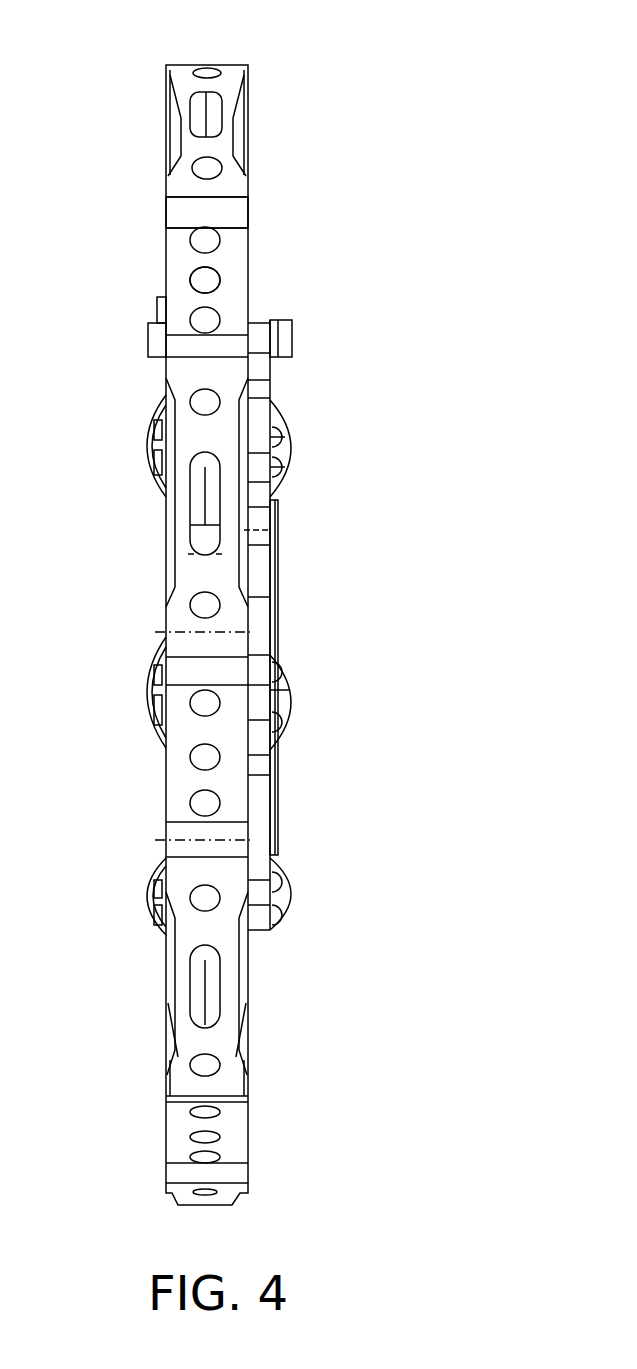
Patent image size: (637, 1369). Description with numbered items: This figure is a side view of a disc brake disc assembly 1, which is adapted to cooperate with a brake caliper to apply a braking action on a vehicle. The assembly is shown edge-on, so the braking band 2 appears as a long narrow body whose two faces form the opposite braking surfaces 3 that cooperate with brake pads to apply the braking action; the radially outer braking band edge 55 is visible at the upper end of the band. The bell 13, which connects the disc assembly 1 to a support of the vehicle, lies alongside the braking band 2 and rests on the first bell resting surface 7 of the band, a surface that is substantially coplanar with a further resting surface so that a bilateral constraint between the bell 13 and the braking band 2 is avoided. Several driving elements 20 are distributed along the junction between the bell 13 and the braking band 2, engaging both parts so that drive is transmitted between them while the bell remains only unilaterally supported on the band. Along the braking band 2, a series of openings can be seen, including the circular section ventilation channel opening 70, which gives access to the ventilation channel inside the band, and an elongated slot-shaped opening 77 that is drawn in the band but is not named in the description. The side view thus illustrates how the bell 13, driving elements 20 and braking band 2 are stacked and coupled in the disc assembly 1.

The disc assembly 1 is at (410, 271).
The braking band 2 is at (175, 793).
The opposite braking surface 3 is at (251, 154).
The first bell resting surface 7 is at (166, 222).
The bell 13 is at (280, 800).
The driving element 20 is at (292, 342).
The radially outer braking band edge 55 is at (218, 65).
The circular section ventilation channel opening 70 is at (222, 272).
The elongated slot 77 is at (183, 472).